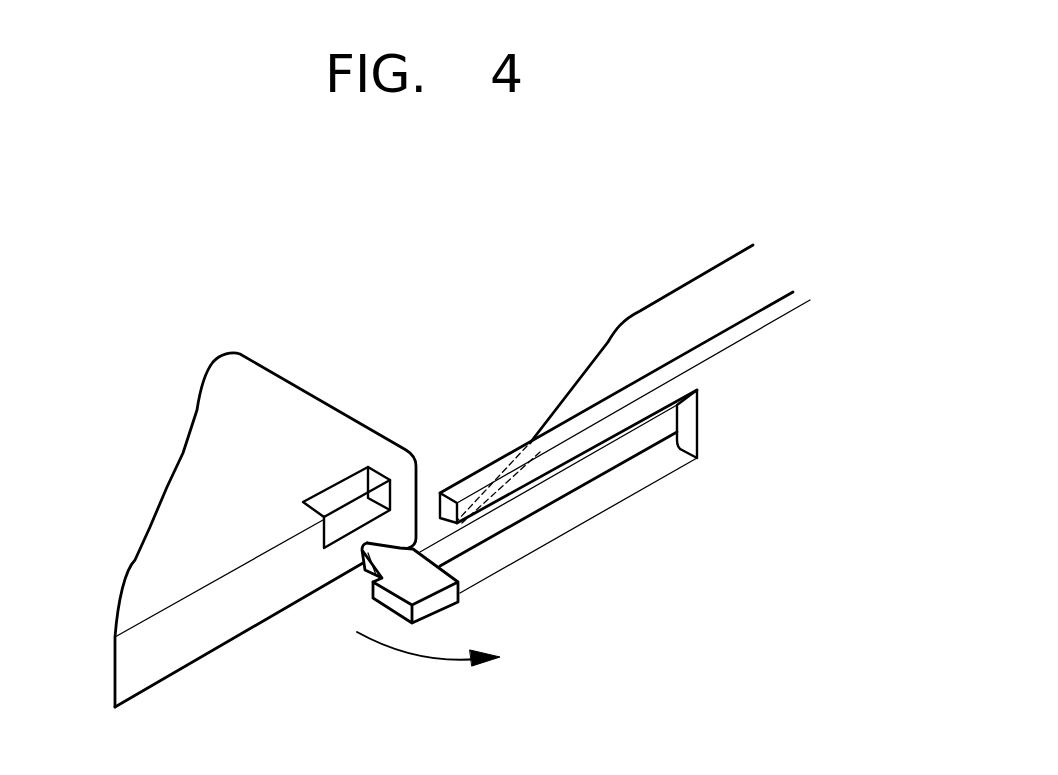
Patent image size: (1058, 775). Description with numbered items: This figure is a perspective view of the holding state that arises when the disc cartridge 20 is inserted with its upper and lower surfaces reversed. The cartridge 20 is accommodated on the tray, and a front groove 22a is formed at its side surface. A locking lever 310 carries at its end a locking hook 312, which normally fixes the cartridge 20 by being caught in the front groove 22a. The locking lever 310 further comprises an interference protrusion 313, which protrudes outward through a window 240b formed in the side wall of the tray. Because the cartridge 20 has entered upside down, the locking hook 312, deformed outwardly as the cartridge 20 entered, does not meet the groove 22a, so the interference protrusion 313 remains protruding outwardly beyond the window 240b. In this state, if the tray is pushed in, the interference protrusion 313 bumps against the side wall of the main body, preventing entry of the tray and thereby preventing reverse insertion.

The disc cartridge 20 is at (307, 400).
The front groove 22a is at (360, 490).
The locking lever 310 is at (610, 362).
The window 240b is at (647, 467).
The locking hook 312 is at (363, 572).
The interference protrusion 313 is at (433, 604).